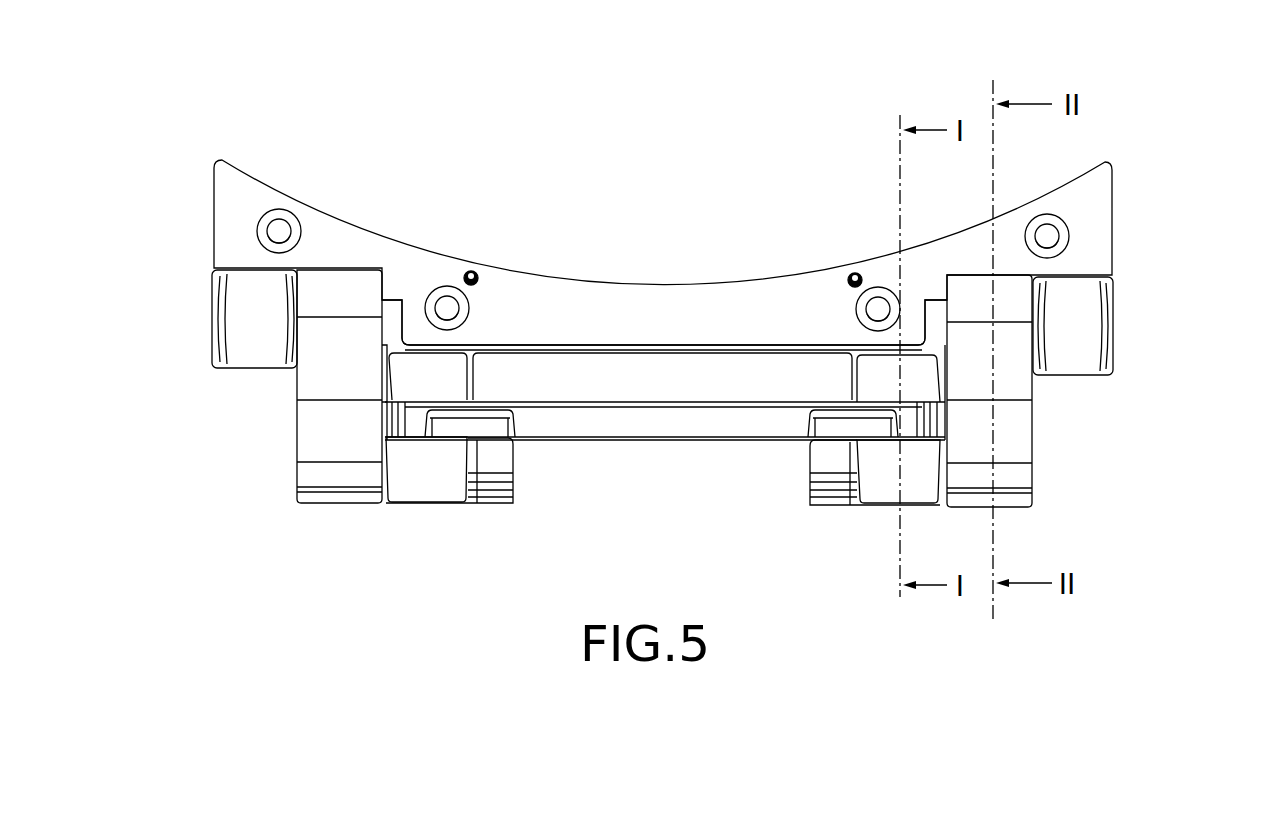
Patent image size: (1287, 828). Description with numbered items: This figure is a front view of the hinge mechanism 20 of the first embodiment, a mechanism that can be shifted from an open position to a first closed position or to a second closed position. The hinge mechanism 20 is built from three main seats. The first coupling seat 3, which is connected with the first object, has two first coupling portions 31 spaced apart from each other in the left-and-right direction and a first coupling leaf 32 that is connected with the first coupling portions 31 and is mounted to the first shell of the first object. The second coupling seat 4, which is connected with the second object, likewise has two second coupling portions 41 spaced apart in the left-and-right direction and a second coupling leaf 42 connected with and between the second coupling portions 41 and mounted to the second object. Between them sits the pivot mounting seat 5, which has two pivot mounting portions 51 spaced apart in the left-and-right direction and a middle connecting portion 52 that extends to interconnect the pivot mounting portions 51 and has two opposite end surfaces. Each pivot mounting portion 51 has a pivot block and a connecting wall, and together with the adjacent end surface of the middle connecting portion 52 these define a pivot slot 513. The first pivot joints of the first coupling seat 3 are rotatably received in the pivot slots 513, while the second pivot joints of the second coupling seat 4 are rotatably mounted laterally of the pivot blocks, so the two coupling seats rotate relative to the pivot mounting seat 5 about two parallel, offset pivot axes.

The hinge mechanism 20 is at (1140, 349).
The first coupling seat 3 is at (674, 455).
The first coupling portions 31 is at (430, 478).
The first coupling leaf 32 is at (600, 427).
The second coupling seat 4 is at (668, 278).
The second coupling portions 41 is at (218, 322).
The second coupling leaf 42 is at (587, 307).
The pivot mounting seat 5 is at (719, 366).
The pivot mounting portions 51 is at (292, 430).
The middle connecting portion 52 is at (615, 375).
The pivot slot 513 is at (393, 322).